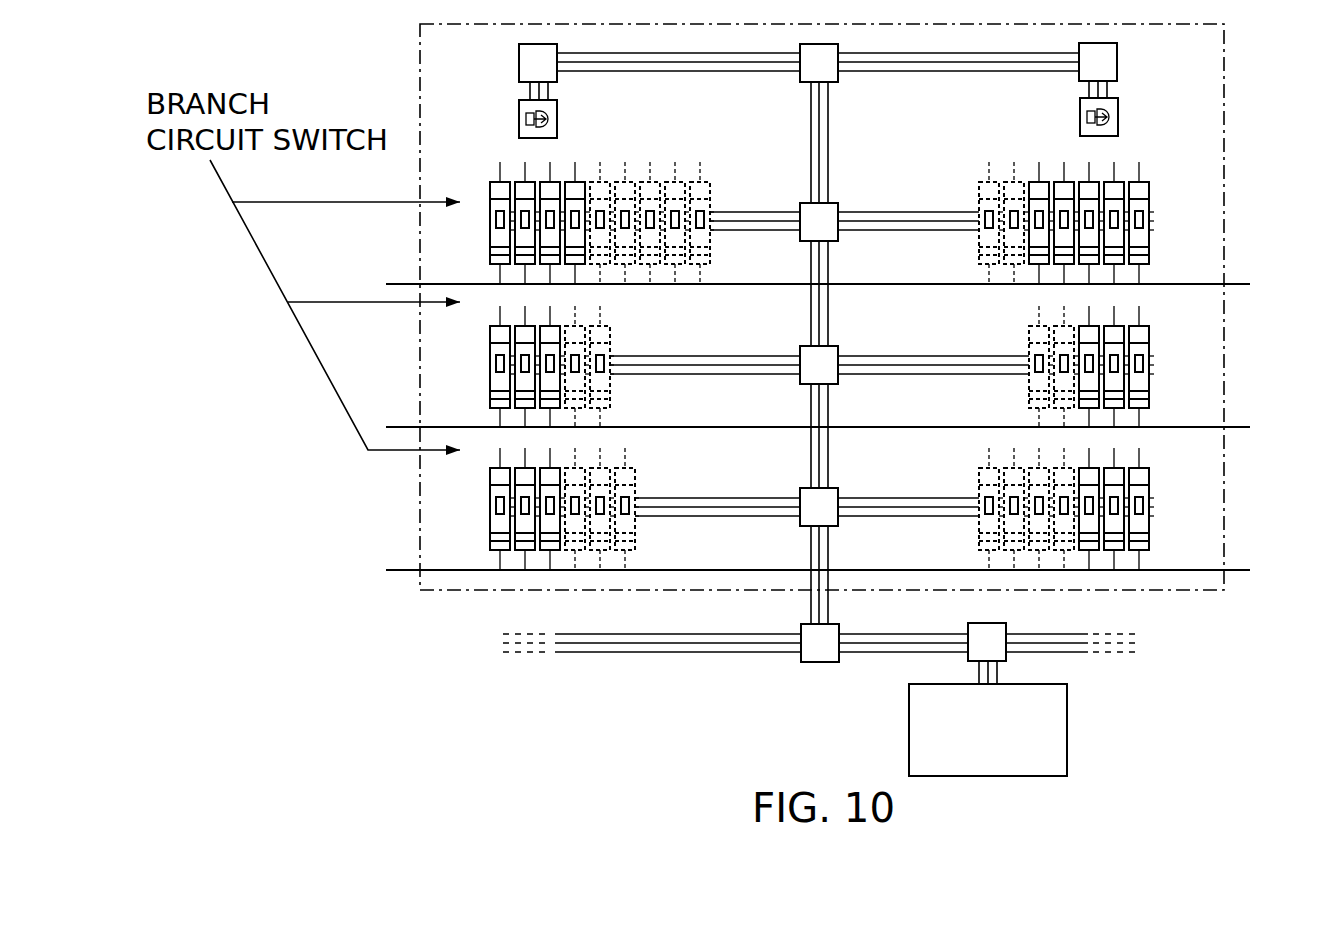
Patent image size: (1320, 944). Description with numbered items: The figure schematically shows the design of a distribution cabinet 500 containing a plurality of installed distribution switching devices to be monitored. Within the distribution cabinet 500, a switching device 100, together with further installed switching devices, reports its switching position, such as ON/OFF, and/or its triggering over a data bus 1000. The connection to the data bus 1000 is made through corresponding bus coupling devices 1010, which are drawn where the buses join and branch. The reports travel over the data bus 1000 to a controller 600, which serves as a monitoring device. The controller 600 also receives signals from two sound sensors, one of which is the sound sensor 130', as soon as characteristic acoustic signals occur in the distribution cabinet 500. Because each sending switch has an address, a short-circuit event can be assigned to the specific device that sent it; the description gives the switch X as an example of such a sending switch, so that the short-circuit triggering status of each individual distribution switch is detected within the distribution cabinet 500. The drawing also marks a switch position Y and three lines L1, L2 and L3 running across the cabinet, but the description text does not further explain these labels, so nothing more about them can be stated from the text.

The bus coupling device 1010 is at (519, 62).
The sound sensor 130' is at (830, 120).
The switching device 100 is at (1138, 258).
The distribution cabinet 500 is at (1225, 192).
The controller 600 is at (1070, 745).
The data bus 1000 is at (740, 703).
The switch X is at (978, 183).
The switch position Y is at (1143, 480).
The line L1 is at (839, 282).
The line L2 is at (839, 425).
The line L3 is at (839, 568).